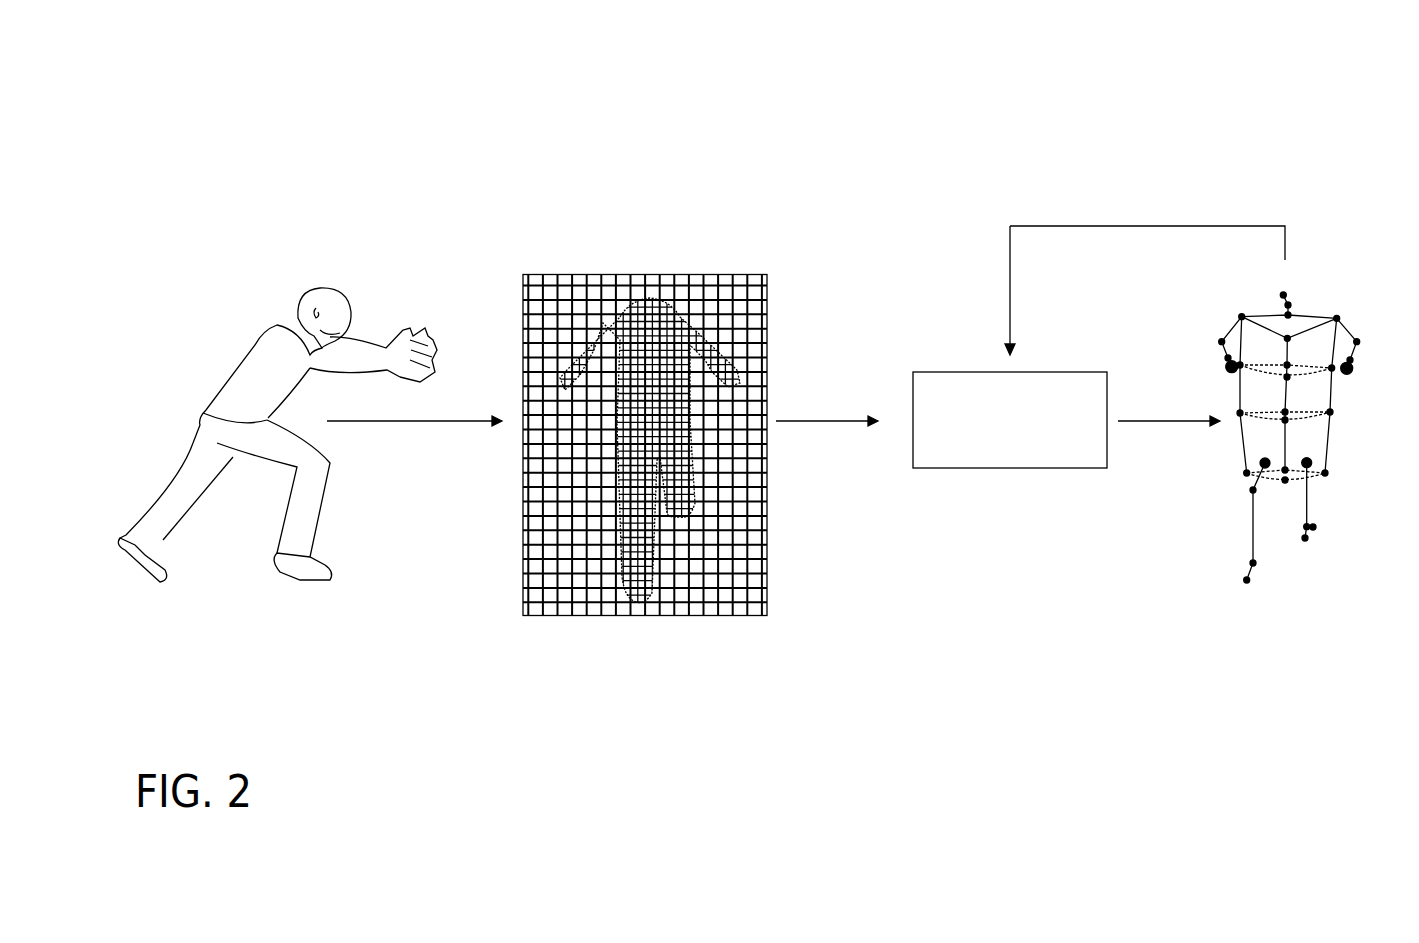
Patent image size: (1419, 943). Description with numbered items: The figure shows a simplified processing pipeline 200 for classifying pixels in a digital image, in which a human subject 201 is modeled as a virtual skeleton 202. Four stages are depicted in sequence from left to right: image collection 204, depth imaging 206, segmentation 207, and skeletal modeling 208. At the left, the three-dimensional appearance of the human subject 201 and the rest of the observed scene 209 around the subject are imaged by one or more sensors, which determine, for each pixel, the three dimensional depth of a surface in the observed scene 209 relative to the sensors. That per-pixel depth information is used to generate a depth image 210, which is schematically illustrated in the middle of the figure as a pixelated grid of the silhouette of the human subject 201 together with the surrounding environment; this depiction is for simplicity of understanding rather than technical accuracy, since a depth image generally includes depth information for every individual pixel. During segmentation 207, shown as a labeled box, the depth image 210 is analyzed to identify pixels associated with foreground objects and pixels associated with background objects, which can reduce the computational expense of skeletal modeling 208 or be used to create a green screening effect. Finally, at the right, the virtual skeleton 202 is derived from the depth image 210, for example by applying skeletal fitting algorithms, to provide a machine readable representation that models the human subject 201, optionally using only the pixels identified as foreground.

The processing pipeline 200 is at (361, 93).
The human subject 201 is at (254, 333).
The virtual skeleton 202 is at (1305, 307).
The image collection 204 is at (234, 614).
The depth imaging 206 is at (645, 634).
The segmentation 207 is at (1001, 487).
The skeletal modeling 208 is at (1272, 614).
The observed scene 209 is at (365, 264).
The depth image 210 is at (653, 269).